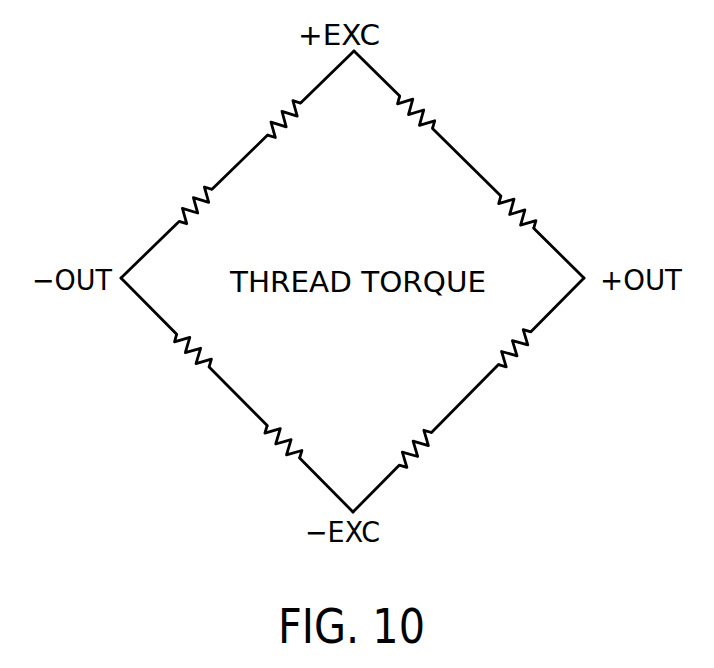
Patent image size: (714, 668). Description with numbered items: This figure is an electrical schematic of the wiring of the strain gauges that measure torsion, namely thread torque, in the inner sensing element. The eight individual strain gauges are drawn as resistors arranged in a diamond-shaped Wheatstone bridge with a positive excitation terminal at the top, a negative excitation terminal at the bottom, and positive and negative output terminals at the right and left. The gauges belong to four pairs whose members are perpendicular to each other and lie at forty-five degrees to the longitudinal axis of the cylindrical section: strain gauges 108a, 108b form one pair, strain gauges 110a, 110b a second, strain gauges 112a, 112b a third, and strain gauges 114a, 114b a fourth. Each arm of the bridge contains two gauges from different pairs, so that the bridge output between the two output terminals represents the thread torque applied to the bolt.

The strain gauge 108a is at (423, 100).
The strain gauge 108b is at (183, 202).
The strain gauge 110a is at (527, 202).
The strain gauge 110b is at (282, 108).
The strain gauge 112a is at (277, 450).
The strain gauge 112b is at (527, 350).
The strain gauge 114a is at (183, 357).
The strain gauge 114b is at (427, 450).